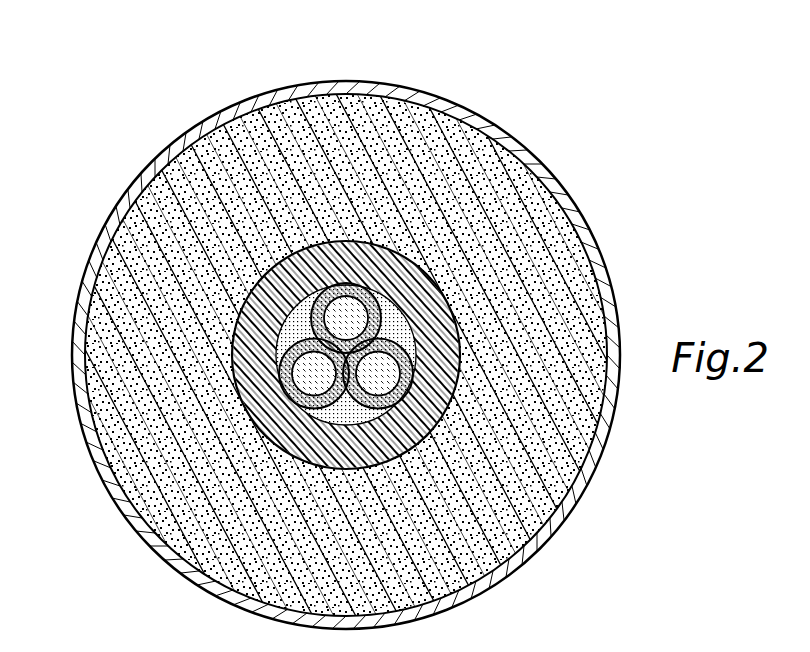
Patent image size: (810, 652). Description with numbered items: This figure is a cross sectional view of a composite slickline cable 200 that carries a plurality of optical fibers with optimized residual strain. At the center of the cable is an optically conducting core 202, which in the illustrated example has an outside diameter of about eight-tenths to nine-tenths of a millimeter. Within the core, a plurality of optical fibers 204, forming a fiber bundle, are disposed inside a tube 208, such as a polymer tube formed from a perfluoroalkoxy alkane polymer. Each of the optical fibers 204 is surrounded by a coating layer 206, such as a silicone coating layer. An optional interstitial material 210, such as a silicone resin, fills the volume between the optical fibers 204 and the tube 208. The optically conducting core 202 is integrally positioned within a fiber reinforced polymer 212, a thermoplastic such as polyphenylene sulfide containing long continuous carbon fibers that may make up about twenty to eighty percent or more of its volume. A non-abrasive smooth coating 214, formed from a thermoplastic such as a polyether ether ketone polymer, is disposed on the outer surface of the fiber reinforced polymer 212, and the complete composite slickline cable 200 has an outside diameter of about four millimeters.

The composite slickline cable 200 is at (489, 91).
The optically conducting core 202 is at (243, 269).
The optical fibers 204 is at (400, 251).
The coating layer 206 is at (433, 313).
The tube 208 is at (345, 305).
The interstitial material 210 is at (330, 405).
The fiber reinforced polymer 212 is at (463, 573).
The non-abrasive smooth coating 214 is at (533, 532).